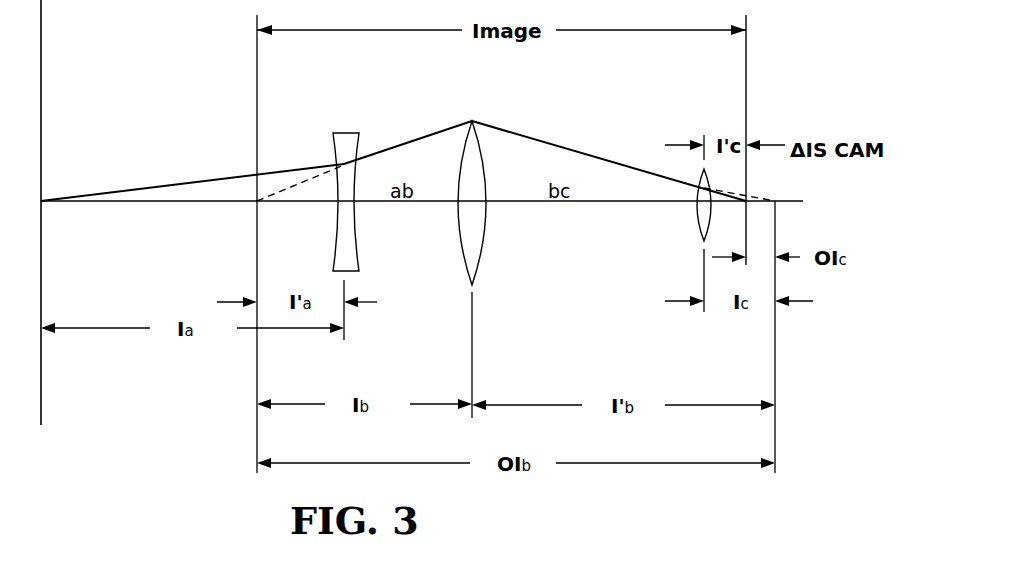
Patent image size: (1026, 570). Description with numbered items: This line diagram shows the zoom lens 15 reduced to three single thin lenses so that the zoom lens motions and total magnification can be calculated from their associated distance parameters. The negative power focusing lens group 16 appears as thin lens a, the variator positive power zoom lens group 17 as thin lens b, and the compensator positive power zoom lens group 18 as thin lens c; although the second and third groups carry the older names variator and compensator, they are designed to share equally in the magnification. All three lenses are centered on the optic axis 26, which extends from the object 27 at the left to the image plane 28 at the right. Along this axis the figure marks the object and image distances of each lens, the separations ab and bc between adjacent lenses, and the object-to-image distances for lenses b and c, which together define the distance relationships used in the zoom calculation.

The zoom lens 15 is at (793, 61).
The negative power focusing lens group 16 is at (343, 123).
The variator positive power zoom lens group 17 is at (490, 109).
The compensator positive power zoom lens group 18 is at (672, 135).
The optic axis 26 is at (644, 202).
The object 27 is at (41, 148).
The image plane 28 is at (746, 63).